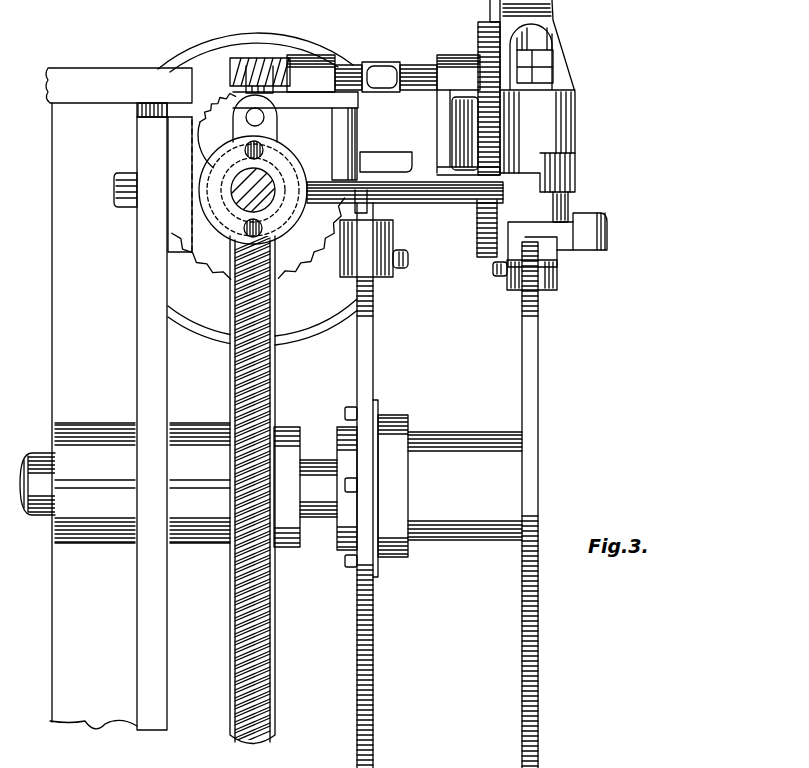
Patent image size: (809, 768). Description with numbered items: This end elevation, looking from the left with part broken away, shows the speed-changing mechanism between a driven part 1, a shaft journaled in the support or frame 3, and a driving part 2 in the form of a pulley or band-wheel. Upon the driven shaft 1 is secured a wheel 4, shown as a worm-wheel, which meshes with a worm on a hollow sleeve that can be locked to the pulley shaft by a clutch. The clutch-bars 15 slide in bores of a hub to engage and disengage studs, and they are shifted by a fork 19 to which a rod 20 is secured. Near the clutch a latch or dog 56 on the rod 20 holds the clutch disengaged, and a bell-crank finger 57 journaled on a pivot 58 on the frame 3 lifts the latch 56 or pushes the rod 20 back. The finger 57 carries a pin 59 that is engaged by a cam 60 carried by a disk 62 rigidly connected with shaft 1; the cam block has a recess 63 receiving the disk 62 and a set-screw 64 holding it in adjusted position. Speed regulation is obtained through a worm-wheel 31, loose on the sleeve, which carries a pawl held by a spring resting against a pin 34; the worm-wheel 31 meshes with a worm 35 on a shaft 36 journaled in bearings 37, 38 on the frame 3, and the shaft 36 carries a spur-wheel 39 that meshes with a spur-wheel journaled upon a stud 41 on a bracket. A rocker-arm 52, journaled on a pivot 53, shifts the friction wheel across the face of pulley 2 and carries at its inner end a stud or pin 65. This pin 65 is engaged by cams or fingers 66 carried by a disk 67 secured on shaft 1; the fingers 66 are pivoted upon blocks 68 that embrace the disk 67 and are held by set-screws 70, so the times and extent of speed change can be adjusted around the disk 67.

The driven part 1 is at (43, 444).
The driving part 2 is at (257, 189).
The support or frame 3 is at (119, 399).
The worm-wheel 4 is at (241, 490).
The clutch-bars 15 is at (245, 152).
The fork 19 is at (267, 130).
The rod 20 is at (252, 117).
The worm-wheel 31 is at (258, 238).
The pin 34 is at (415, 135).
The worm 35 is at (252, 57).
The shaft 36 is at (407, 67).
The bearing 37 is at (311, 73).
The bearing 38 is at (461, 120).
The spur-wheel 39 is at (480, 48).
The stud 41 is at (482, 257).
The rocker-arm 52 is at (560, 26).
The pivot 53 is at (556, 70).
The latch or dog 56 is at (276, 62).
The finger 57 is at (295, 99).
The pivot 58 is at (380, 72).
The pin 59 is at (355, 211).
The cam 60 is at (394, 231).
The disk 62 is at (378, 357).
The recess 63 is at (366, 248).
The set-screw 64 is at (403, 269).
The stud or pin 65 is at (570, 200).
The cam or finger 66 is at (588, 230).
The disk 67 is at (531, 392).
The block 68 is at (557, 240).
The set-screw 70 is at (500, 278).